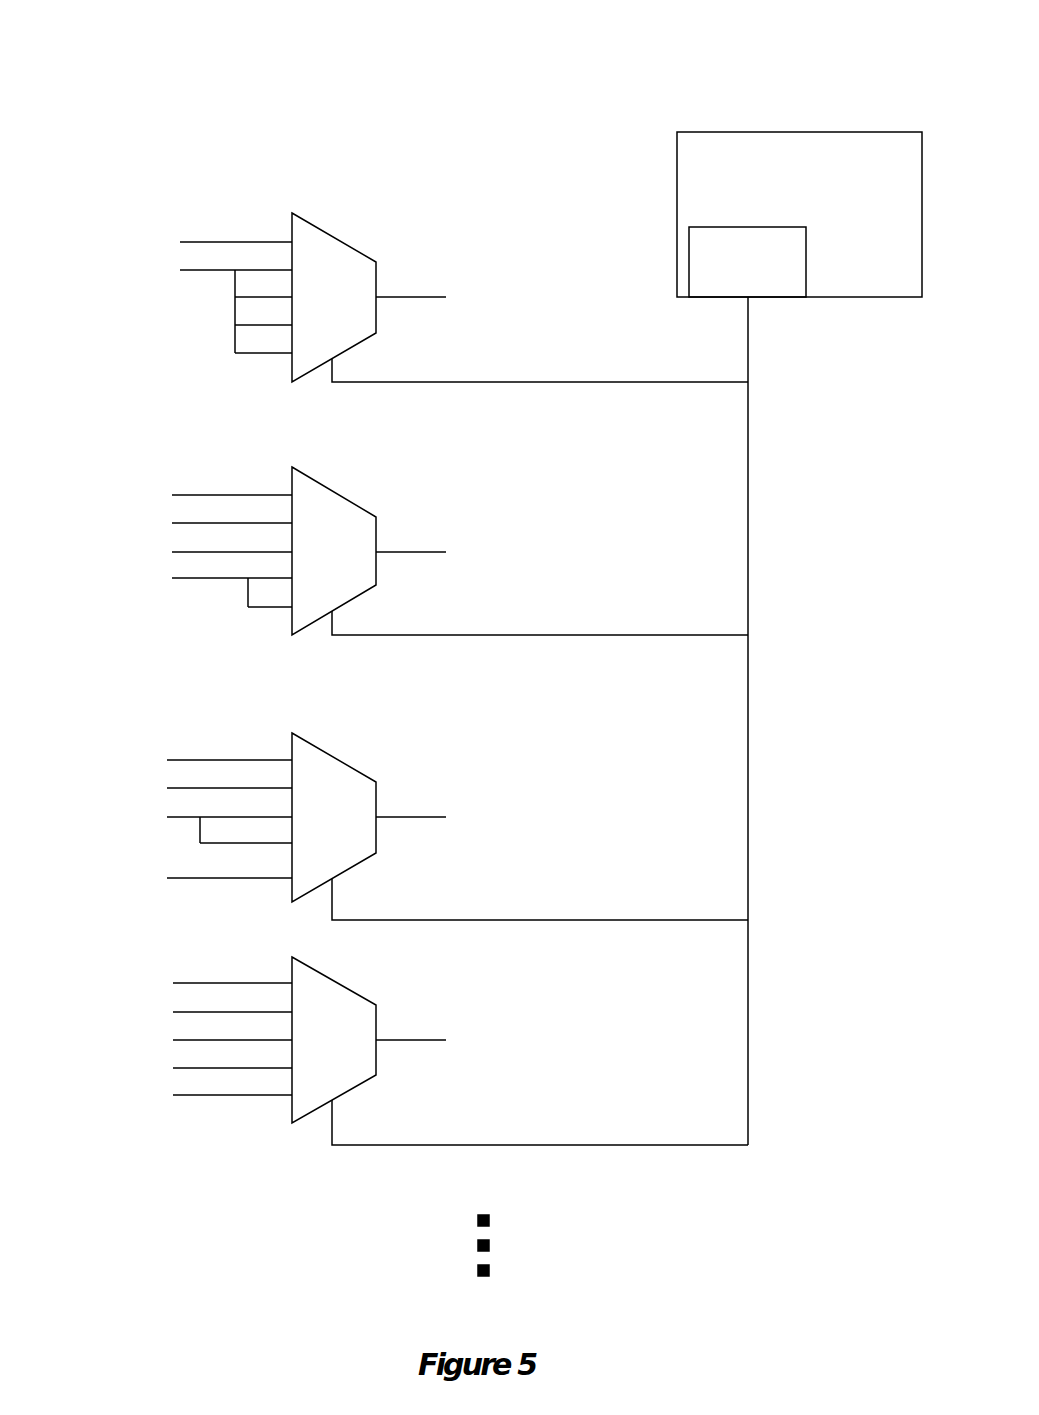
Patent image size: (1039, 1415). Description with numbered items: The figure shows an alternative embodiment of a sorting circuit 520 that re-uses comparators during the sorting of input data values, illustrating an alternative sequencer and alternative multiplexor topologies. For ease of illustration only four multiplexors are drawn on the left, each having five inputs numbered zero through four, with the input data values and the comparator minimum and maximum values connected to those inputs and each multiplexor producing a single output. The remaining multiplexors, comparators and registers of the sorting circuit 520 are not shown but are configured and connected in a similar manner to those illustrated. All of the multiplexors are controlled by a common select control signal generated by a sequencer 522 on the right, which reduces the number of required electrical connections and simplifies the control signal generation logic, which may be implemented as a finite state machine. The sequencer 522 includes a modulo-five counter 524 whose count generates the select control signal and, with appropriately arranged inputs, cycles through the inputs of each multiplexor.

The sorting circuit 520 is at (52, 33).
The sequencer 522 is at (799, 200).
The MOD-5 counter 524 is at (747, 246).